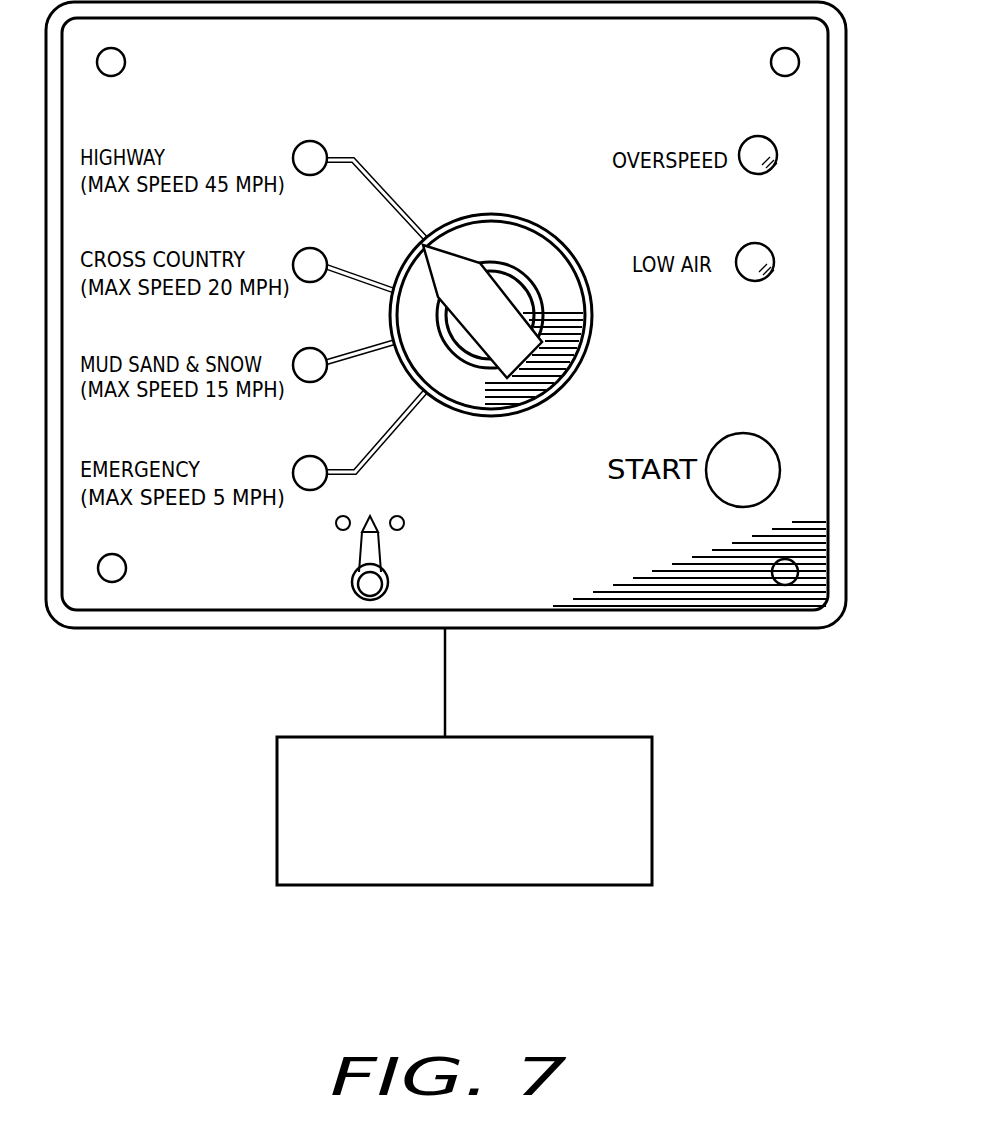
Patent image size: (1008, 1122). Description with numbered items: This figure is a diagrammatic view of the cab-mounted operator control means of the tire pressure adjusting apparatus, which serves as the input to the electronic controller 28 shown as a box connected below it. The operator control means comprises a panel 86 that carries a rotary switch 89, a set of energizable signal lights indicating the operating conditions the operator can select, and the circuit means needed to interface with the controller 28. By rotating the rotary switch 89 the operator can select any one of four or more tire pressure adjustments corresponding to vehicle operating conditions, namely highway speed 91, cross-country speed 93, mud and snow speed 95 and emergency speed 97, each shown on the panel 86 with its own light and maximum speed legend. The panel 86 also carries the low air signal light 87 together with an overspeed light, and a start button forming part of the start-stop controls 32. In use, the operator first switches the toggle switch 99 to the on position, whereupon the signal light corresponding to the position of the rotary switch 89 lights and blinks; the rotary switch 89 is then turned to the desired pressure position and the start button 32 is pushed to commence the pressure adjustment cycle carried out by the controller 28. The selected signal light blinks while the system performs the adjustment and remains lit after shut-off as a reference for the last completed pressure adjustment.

The electronic controller 28 is at (458, 886).
The start-stop controls 32 is at (765, 476).
The panel 86 is at (800, 385).
The low air signal light 87 is at (775, 262).
The rotary switch 89 is at (450, 262).
The highway speed position 91 is at (307, 143).
The cross-country speed position 93 is at (309, 250).
The mud and snow speed position 95 is at (312, 350).
The emergency speed position 97 is at (314, 457).
The toggle switch 99 is at (360, 560).